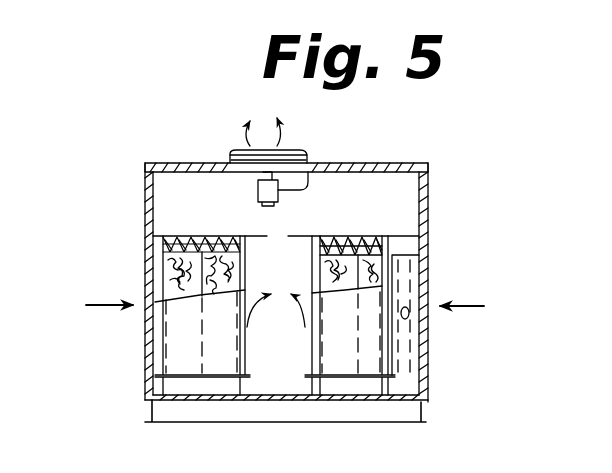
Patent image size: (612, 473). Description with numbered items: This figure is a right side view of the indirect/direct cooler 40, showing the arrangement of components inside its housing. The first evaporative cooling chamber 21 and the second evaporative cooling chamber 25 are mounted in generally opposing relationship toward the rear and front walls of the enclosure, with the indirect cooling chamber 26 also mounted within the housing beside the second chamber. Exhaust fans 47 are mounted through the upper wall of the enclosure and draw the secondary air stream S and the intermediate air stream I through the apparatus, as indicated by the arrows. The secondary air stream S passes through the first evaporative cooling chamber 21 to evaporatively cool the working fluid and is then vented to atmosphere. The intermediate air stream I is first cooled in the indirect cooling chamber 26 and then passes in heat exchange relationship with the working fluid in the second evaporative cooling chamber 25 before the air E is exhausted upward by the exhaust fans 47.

The first evaporative cooling chamber 21 is at (206, 190).
The second evaporative cooling chamber 25 is at (381, 206).
The indirect cooling chamber 26 is at (406, 249).
The indirect/direct cooler 40 is at (147, 428).
The exhaust fan 47 is at (305, 157).
The exhaust air flow E is at (258, 130).
The secondary air stream S is at (96, 300).
The intermediate air stream I is at (490, 304).